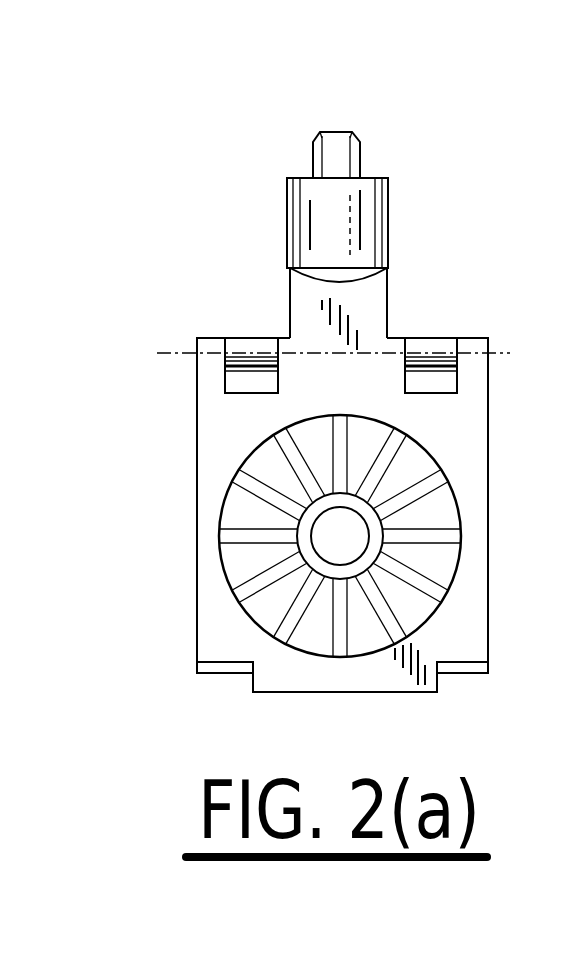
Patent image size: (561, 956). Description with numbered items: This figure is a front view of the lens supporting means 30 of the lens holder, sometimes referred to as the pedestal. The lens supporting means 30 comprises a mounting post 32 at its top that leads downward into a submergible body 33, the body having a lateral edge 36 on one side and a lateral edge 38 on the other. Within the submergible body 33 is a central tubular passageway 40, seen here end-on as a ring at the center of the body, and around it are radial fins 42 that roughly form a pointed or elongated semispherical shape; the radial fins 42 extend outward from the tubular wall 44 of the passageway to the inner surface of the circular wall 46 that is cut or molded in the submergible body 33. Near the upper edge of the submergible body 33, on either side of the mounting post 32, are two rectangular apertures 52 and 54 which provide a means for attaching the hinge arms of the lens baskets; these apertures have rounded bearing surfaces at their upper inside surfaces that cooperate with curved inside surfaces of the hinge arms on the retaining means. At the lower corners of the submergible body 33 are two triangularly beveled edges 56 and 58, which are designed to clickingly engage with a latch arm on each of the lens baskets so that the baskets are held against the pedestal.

The lens supporting means 30 is at (215, 174).
The mounting post 32 is at (290, 298).
The submergible body 33 is at (213, 437).
The lateral edge 36 is at (197, 583).
The lateral edge 38 is at (488, 565).
The central tubular passageway 40 is at (340, 535).
The radial fins 42 is at (424, 478).
The tubular wall 44 is at (333, 376).
The circular wall 46 is at (305, 660).
The rectangular aperture 52 is at (240, 382).
The rectangular aperture 54 is at (440, 385).
The triangularly beveled edge 56 is at (205, 675).
The triangularly beveled edge 58 is at (467, 675).